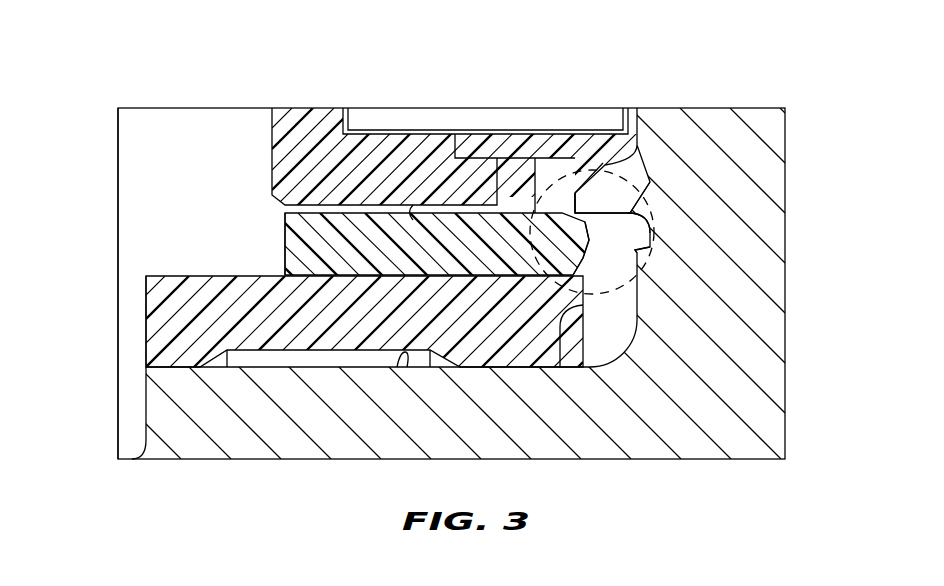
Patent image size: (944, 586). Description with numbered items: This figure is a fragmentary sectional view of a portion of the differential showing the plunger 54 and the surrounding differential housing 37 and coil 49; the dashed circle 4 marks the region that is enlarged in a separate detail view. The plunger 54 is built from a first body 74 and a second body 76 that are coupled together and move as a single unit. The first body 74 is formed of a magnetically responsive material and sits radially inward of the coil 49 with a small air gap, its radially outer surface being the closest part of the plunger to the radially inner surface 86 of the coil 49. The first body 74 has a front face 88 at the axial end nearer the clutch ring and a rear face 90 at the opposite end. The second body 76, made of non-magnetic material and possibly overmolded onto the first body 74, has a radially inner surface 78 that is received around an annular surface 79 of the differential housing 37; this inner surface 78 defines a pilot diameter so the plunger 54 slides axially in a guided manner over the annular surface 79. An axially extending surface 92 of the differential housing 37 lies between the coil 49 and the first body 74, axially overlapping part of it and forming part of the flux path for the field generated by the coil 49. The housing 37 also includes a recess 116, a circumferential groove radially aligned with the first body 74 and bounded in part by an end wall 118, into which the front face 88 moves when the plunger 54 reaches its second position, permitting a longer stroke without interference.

The differential housing 37 is at (762, 128).
The coil 49 is at (372, 100).
The detail region of FIG. 4 is at (573, 168).
The first body 74 is at (318, 242).
The rear face 90 is at (285, 255).
The radially inner surface 86 is at (410, 212).
The second body 76 is at (170, 323).
The radially inner surface 78 is at (480, 370).
The annular surface 79 is at (404, 367).
The axially extending surface 92 is at (604, 228).
The recess 116 is at (652, 238).
The end wall 118 is at (648, 250).
The front face 88 is at (585, 257).
The plunger 54 is at (163, 227).